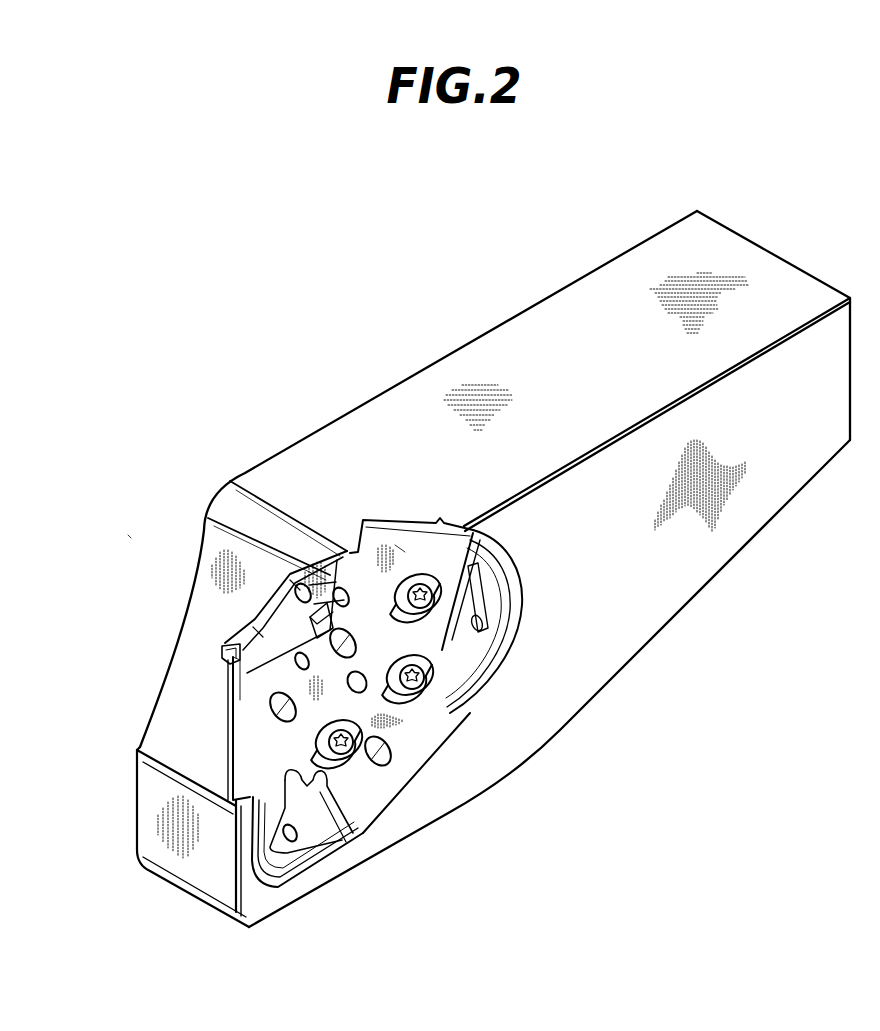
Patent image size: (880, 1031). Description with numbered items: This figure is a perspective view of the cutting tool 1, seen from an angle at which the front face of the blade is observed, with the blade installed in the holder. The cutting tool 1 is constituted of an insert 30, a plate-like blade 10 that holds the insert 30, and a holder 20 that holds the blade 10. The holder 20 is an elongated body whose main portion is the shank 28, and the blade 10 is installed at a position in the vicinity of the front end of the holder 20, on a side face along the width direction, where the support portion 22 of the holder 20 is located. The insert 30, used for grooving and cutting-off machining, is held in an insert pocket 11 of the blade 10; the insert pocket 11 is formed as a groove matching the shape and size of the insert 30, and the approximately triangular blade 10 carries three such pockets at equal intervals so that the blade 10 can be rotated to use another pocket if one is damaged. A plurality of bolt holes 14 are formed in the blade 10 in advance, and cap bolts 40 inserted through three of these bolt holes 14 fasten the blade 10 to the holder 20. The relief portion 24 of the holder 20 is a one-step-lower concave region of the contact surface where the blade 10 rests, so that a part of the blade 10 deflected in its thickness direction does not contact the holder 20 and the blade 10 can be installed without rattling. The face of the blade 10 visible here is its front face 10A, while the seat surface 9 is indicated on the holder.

The cutting tool 1 is at (130, 534).
The cartridge seat surface 9 is at (402, 543).
The blade 10 is at (382, 788).
The front face of cartridge 10A is at (253, 697).
The insert pocket 11 is at (469, 558).
The bolt hole 14 is at (348, 628).
The holder 20 is at (663, 658).
The support portion 22 is at (250, 794).
The relief portion 24 is at (487, 570).
The shank 28 is at (521, 362).
The insert 30 is at (222, 657).
The cap bolt 40 is at (414, 573).